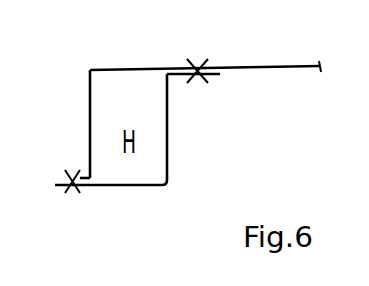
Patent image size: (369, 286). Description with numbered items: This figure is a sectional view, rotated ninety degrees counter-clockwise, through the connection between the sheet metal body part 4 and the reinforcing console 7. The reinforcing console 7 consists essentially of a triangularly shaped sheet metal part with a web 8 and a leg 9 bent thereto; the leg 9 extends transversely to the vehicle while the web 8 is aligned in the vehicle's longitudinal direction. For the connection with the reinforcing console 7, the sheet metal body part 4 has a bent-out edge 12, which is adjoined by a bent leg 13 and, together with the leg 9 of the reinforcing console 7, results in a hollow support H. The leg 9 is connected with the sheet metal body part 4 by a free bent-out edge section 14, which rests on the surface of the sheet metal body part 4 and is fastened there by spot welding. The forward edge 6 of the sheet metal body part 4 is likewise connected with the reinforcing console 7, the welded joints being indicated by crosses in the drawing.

The sheet metal body part 4 is at (241, 66).
The bent leg 13 is at (93, 117).
The bent-out edge 12 is at (83, 168).
The forward edge 6 is at (66, 176).
The free bent-out edge section 14 is at (213, 78).
The leg 9 is at (168, 139).
The web 8 is at (98, 187).
The reinforcing console 7 is at (143, 187).